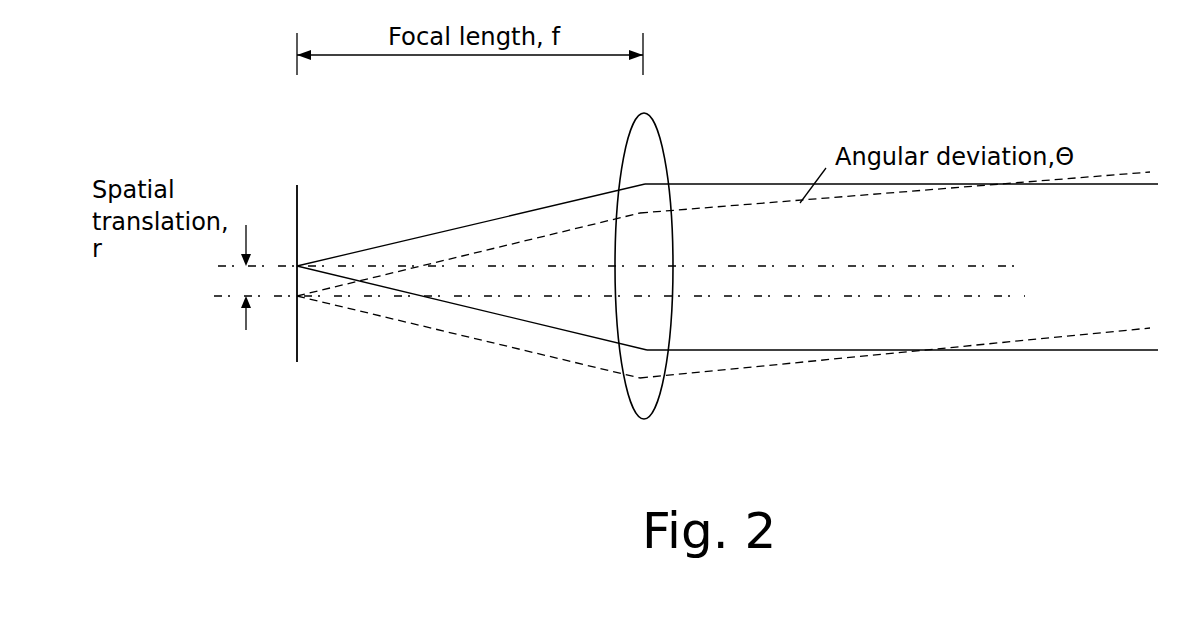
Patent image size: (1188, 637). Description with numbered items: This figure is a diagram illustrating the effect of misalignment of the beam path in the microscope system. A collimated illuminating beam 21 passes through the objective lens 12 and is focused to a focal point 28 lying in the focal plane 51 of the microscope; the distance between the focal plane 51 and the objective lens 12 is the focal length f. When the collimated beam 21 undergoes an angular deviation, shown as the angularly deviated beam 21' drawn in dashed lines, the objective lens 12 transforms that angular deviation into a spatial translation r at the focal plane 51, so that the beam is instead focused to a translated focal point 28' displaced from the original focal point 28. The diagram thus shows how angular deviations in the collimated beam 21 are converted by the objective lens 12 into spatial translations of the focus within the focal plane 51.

The objective lens 12 is at (652, 117).
The illuminating beam 21 is at (899, 168).
The angularly deviated illuminating beam 21' is at (899, 378).
The focal point 28 is at (472, 267).
The translated focal point 28' is at (468, 295).
The focal plane 51 is at (302, 357).